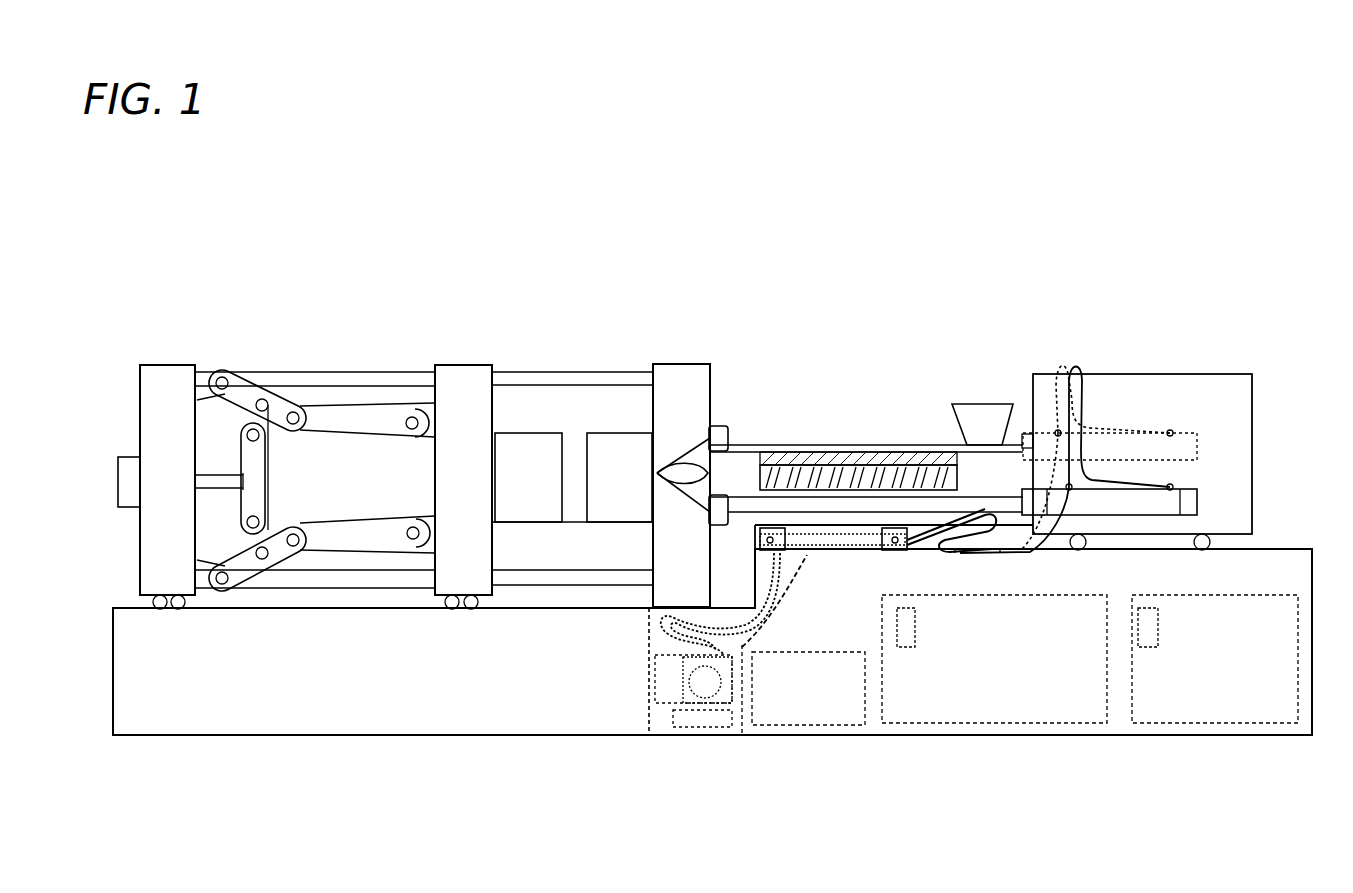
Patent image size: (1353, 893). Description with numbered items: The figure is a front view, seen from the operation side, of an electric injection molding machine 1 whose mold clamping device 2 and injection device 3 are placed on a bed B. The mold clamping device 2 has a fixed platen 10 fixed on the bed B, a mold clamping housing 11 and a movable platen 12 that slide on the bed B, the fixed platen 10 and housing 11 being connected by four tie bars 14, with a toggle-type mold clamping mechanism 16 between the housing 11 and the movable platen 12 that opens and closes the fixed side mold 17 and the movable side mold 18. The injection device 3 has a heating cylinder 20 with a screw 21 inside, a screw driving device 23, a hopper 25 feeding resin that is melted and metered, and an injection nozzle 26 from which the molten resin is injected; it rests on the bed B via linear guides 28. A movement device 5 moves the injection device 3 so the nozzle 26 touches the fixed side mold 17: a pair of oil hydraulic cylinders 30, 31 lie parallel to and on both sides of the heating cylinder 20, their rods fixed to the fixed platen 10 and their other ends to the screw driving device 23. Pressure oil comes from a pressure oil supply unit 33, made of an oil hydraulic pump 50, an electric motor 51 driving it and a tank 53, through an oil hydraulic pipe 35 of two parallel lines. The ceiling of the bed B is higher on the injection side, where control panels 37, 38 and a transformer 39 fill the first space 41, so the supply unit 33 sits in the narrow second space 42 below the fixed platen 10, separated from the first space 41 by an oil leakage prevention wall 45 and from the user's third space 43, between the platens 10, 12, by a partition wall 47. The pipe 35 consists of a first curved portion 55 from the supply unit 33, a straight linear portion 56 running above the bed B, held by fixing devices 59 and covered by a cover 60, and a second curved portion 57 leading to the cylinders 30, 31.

The injection molding machine 1 is at (1207, 158).
The mold clamping device 2 is at (666, 249).
The injection device 3 is at (1203, 290).
The movement device 5 is at (1208, 413).
The fixed platen 10 is at (682, 364).
The mold clamping housing 11 is at (158, 366).
The movable platen 12 is at (473, 365).
The tie bar 14 is at (377, 372).
The mold clamping mechanism 16 is at (286, 366).
The fixed side mold 17 is at (623, 432).
The movable side mold 18 is at (540, 432).
The heating cylinder 20 is at (805, 447).
The screw 21 is at (848, 452).
The screw driving device 23 is at (1141, 373).
The hopper 25 is at (985, 404).
The injection nozzle 26 is at (663, 470).
The linear guide 28 is at (1215, 546).
The oil hydraulic cylinder 30 is at (1183, 446).
The oil hydraulic cylinder 31 is at (1190, 500).
The pressure oil supply unit 33 is at (692, 750).
The oil hydraulic pipe 35 is at (826, 572).
The control panel 37 is at (1010, 680).
The control panel 38 is at (1230, 680).
The transformer 39 is at (848, 710).
The first space 41 is at (1052, 575).
The second space 42 is at (662, 725).
The third space 43 is at (527, 690).
The oil leakage prevention wall 45 is at (745, 690).
The partition wall 47 is at (648, 683).
The oil hydraulic pump 50 is at (660, 700).
The electric motor 51 is at (733, 700).
The tank 53 is at (717, 730).
The first curved portion 55 is at (648, 628).
The linear portion 56 is at (957, 553).
The second curved portion 57 is at (1001, 550).
The fixing device 59 is at (752, 527).
The cover 60 is at (866, 545).
The bed B is at (240, 718).